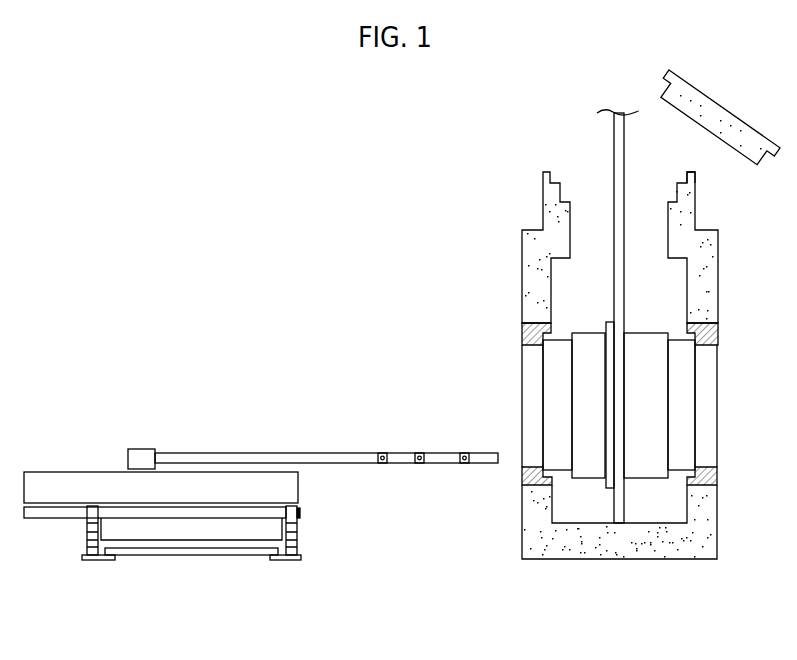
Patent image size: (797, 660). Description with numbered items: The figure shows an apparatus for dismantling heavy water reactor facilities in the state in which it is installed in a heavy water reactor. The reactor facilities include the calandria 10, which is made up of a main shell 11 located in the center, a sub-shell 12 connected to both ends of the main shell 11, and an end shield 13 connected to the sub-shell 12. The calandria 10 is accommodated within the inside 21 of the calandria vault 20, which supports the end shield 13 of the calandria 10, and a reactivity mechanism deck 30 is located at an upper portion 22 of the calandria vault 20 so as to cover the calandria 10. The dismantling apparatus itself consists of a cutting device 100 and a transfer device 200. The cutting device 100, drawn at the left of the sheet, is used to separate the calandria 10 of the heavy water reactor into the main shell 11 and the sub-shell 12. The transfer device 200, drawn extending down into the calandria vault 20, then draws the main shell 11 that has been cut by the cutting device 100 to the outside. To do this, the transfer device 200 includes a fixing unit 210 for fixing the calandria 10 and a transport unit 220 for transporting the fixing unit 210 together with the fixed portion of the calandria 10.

The cutting device 100 is at (252, 434).
The calandria 10 is at (597, 601).
The main shell 11 is at (593, 478).
The sub-shell 12 is at (562, 470).
The end shield 13 is at (522, 457).
The calandria vault 20 is at (713, 259).
The inside 21 is at (666, 289).
The upper portion 22 is at (696, 177).
The reactivity mechanism deck 30 is at (720, 106).
The transfer device 200 is at (536, 316).
The fixing unit 210 is at (610, 321).
The transport unit 220 is at (617, 280).